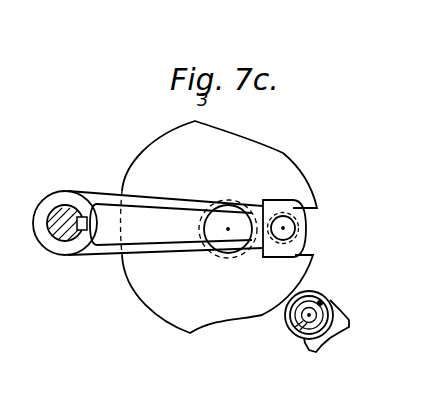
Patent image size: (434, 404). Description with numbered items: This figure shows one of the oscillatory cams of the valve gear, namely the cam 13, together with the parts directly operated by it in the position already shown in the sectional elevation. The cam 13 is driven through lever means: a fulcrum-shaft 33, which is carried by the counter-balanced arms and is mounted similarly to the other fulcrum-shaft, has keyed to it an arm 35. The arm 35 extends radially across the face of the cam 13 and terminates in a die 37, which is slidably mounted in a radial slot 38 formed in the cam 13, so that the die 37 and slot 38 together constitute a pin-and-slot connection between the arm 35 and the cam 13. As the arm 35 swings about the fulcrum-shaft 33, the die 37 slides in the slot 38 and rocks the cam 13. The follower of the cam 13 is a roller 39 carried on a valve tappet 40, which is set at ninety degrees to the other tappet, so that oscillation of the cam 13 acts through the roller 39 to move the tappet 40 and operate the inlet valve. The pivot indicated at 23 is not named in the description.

The oscillatory cam 13 is at (158, 171).
The pivot pin 23 is at (226, 231).
The fulcrum-shaft 33 is at (60, 234).
The arm 35 is at (165, 223).
The die 37 is at (296, 204).
The radial slot 38 is at (314, 255).
The roller 39 is at (295, 335).
The valve tappet 40 is at (310, 347).